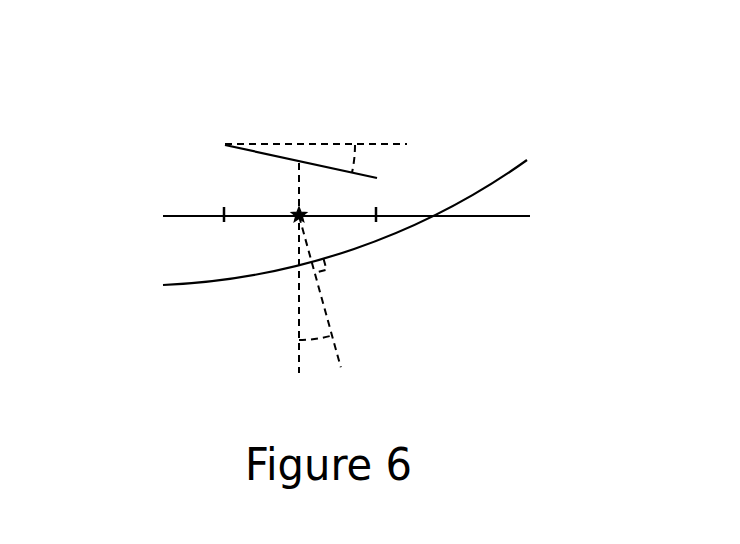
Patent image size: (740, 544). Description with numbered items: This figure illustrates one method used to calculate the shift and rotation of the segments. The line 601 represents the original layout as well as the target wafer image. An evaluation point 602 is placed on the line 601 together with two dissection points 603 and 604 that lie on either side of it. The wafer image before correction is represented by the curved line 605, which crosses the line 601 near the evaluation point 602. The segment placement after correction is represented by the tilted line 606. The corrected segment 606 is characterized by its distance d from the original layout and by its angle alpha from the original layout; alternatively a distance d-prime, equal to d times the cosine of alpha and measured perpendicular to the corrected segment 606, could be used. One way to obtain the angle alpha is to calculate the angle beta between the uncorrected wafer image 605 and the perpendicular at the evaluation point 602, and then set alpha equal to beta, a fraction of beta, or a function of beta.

The line representing original layout and target wafer image 601 is at (477, 229).
The evaluation point 602 is at (271, 225).
The dissection point 603 is at (214, 195).
The dissection point 604 is at (386, 234).
The wafer image before correction 605 is at (494, 162).
The segment placement after correction 606 is at (327, 152).